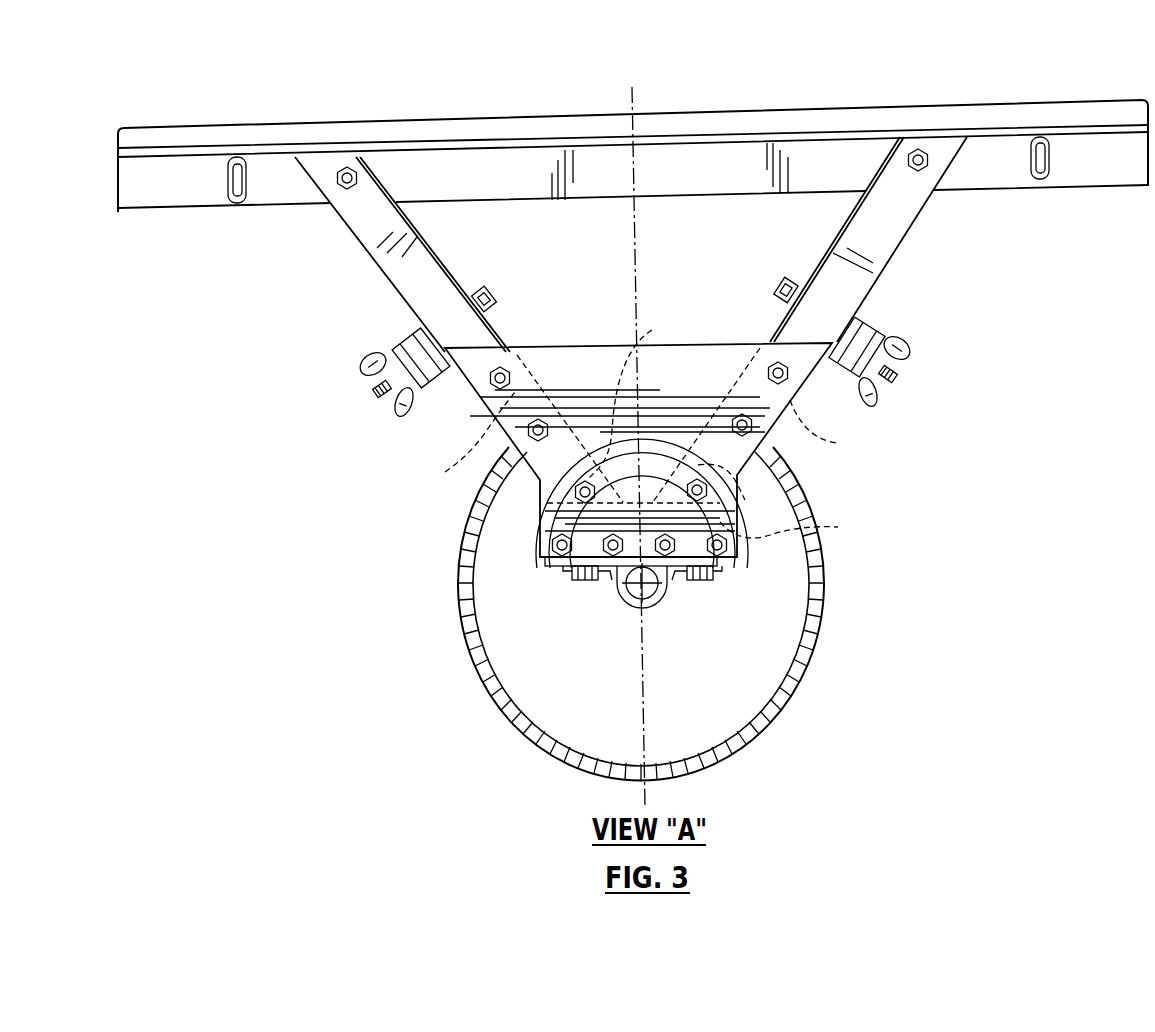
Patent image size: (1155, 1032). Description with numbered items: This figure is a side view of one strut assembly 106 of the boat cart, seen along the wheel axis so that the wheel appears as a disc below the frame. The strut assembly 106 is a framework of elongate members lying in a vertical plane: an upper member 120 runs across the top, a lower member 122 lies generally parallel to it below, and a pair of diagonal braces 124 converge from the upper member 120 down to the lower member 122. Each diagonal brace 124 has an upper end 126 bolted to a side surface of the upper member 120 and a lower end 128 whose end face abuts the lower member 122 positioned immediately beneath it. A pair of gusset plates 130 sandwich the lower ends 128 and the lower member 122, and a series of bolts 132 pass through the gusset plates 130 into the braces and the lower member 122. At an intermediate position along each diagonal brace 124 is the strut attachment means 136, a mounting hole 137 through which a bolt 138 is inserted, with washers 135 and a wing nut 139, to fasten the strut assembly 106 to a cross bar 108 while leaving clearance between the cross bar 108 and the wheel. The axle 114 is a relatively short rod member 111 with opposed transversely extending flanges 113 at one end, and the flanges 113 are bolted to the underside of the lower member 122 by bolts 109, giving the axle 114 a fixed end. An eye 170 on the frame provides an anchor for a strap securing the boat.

The strut assembly 106 is at (957, 93).
The upper member 120 is at (1087, 165).
The eye 170 is at (1040, 150).
The upper end of diagonal brace 126 is at (385, 216).
The gusset plate 130 is at (708, 365).
The bolt 132 is at (490, 385).
The lower end of diagonal brace 128 is at (652, 330).
The diagonal brace 124 is at (445, 472).
The lower member 122 is at (838, 527).
The bolt 138 is at (490, 285).
The strut attachment means 136 is at (488, 288).
The mounting hole 137 is at (840, 312).
The cross bar 108 is at (362, 356).
The wing nut 139 is at (375, 378).
The washers 135 is at (490, 318).
The bolt 109 is at (575, 582).
The axle 114 is at (656, 618).
The flange 113 is at (636, 612).
The rod member 111 is at (533, 733).